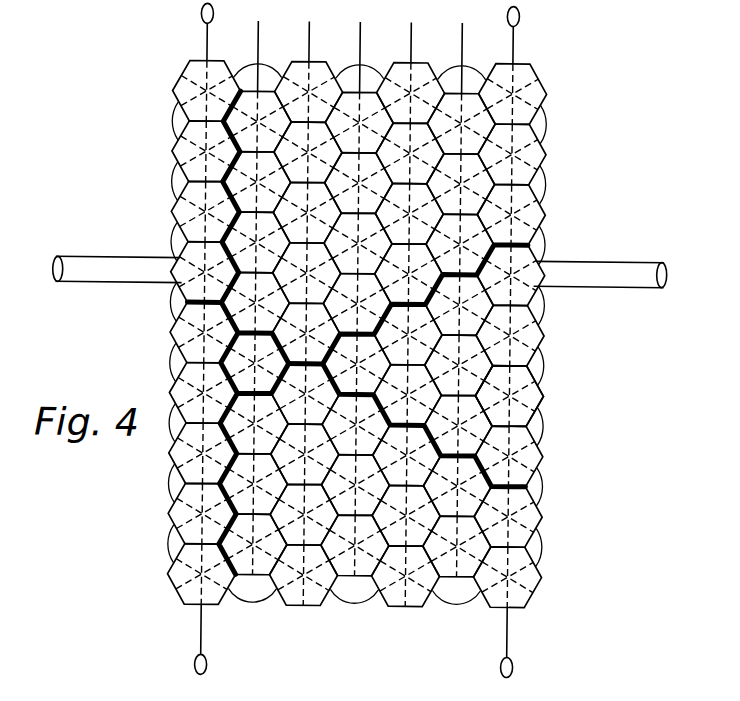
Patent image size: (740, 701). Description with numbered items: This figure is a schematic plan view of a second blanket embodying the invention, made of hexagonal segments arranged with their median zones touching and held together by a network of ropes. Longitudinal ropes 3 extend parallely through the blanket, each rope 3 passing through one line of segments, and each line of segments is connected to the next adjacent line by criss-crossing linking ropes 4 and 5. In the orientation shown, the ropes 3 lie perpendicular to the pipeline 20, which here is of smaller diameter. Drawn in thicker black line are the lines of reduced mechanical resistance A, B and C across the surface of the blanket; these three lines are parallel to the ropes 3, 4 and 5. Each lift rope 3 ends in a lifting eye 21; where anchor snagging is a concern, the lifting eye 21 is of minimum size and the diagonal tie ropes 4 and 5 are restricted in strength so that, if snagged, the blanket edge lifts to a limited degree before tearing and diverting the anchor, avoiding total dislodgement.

The pipeline 20 is at (107, 259).
The lifting eye 21 is at (198, 16).
The longitudinal ropes 3 is at (204, 625).
The linking ropes 4 is at (497, 406).
The linking ropes 5 is at (497, 393).
The line of reduced mechanical resistance A is at (237, 563).
The line of reduced mechanical resistance B is at (518, 498).
The line of reduced mechanical resistance C is at (528, 236).